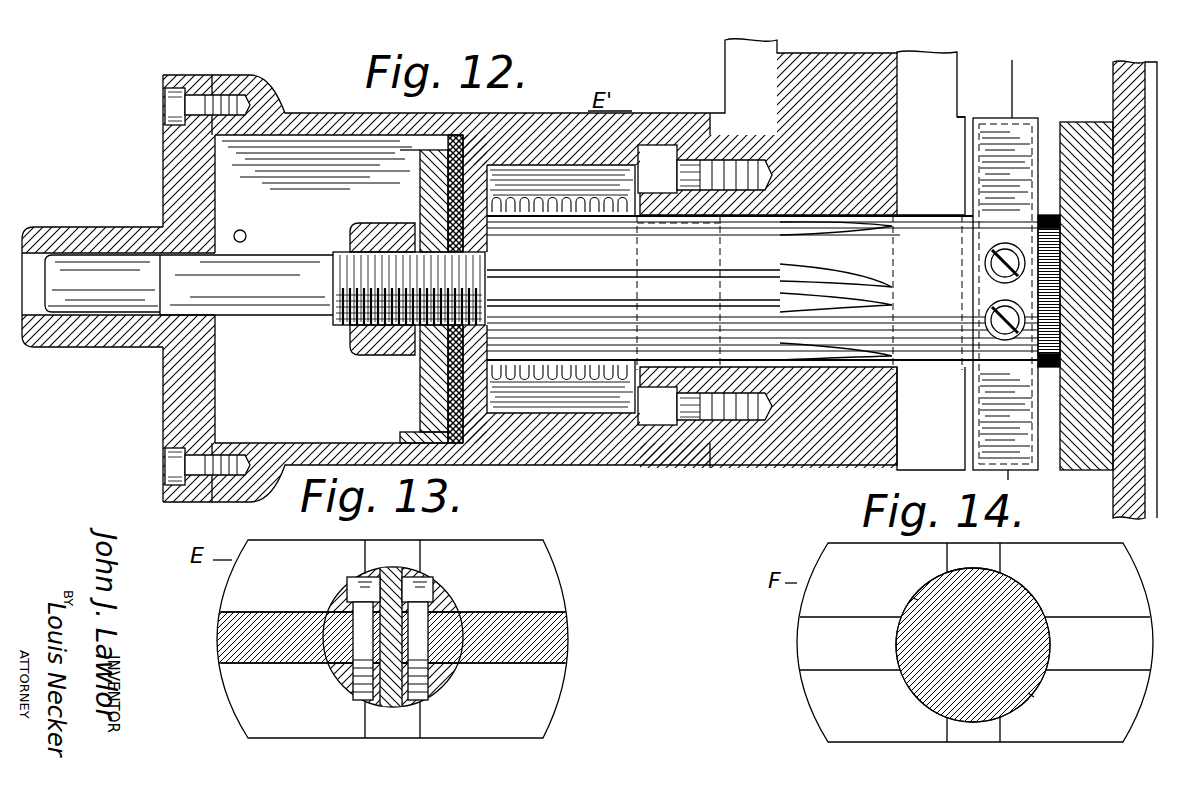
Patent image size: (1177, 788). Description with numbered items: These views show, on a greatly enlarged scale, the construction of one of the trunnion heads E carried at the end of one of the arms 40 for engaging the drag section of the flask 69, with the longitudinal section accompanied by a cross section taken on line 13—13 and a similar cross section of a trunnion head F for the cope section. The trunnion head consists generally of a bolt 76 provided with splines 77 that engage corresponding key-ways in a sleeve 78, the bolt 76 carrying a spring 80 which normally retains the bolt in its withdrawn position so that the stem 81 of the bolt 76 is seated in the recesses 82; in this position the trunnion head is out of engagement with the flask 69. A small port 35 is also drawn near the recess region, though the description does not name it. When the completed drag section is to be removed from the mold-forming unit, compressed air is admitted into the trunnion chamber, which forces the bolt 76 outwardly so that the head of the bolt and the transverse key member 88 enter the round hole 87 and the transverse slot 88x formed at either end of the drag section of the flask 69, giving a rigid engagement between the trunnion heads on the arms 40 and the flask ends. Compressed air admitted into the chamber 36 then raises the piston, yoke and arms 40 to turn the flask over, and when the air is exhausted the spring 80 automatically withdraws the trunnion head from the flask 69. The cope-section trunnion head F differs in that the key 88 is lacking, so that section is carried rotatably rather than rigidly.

In FIG. 12, the arms 40 is at (815, 452).
In FIG. 12, the chamber 36 is at (317, 272).
In FIG. 12, the port 35 is at (257, 238).
In FIG. 12, the recesses 82 is at (103, 278).
In FIG. 12, the stem 81 is at (296, 306).
In FIG. 12, the splines 77 is at (782, 362).
In FIG. 12, the spring 80 is at (612, 383).
In FIG. 12, the bolt 76 is at (897, 217).
In FIG. 13, the bolt 76 is at (440, 683).
In FIG. 14, the bolt 76 is at (937, 683).
In FIG. 12, the sleeve 78 is at (695, 226).
In FIG. 12, the transverse key member 88 is at (1010, 128).
In FIG. 13, the transverse key member 88 is at (268, 626).
In FIG. 12, the transverse slot 88x is at (1062, 130).
In FIG. 13, the transverse slot 88x is at (545, 613).
In FIG. 14, the transverse slot 88x is at (975, 642).
In FIG. 12, the round hole 87 is at (1040, 268).
In FIG. 13, the round hole 87 is at (456, 607).
In FIG. 14, the round hole 87 is at (916, 598).
In FIG. 12, the flask 69 is at (1122, 72).
In FIG. 12, the section line 13 is at (1016, 268).